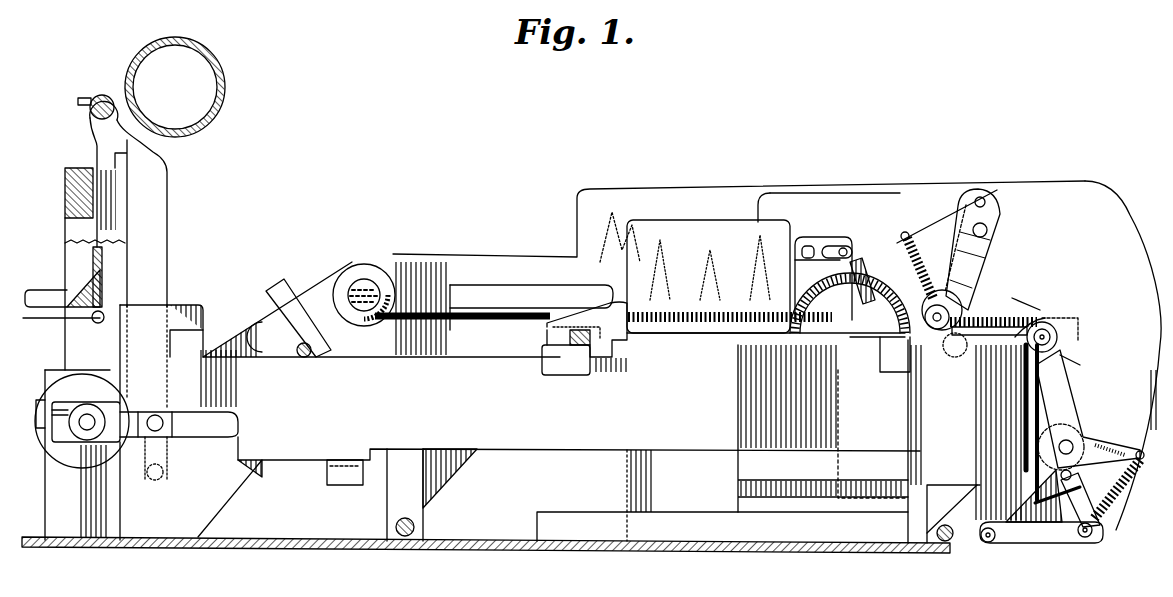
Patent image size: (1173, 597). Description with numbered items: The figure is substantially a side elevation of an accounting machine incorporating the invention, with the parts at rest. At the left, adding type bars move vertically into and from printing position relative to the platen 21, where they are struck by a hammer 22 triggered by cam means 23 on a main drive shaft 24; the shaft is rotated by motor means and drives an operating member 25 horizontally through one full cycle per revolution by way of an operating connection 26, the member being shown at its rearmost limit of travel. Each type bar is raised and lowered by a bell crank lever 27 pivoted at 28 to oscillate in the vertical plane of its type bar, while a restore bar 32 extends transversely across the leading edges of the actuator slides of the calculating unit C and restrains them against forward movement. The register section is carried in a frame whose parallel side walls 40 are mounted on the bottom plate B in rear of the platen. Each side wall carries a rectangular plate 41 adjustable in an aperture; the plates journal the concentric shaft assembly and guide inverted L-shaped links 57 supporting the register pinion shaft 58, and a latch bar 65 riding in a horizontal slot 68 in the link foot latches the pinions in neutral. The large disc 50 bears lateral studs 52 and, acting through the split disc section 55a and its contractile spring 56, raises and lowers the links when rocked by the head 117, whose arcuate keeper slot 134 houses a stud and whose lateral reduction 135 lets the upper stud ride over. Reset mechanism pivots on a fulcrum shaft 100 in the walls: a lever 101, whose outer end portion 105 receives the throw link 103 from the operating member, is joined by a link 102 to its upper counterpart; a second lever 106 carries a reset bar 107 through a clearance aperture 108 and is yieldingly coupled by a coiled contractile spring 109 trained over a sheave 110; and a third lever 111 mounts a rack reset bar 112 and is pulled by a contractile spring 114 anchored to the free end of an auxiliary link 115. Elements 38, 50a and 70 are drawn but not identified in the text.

The platen 21 is at (226, 76).
The hammer 22 is at (97, 96).
The cam means 23 is at (70, 385).
The main drive shaft 24 is at (82, 432).
The operating member 25 is at (333, 477).
The operating connection 26 is at (165, 430).
The bell crank lever 27 is at (328, 282).
The pivot 28 is at (368, 287).
The restore bar 32 is at (580, 337).
The slide 38 is at (288, 280).
The side wall 40 is at (1090, 181).
The rectangular plate 41 is at (798, 236).
The inner disc 50 is at (800, 288).
The lever 50a is at (961, 259).
The lateral stud 52 is at (836, 246).
The split disc section 55a is at (800, 310).
The contractile spring 56 is at (850, 303).
The inverted L-shaped link 57 is at (795, 262).
The register pinion shaft 58 is at (808, 245).
The latch bar 65 is at (846, 250).
The horizontal slot 68 is at (868, 262).
The bar 70 is at (490, 283).
The fulcrum shaft 100 is at (989, 233).
The lever 101 is at (982, 273).
The link 102 is at (1020, 322).
The throw link 103 is at (1015, 548).
The outer end portion 105 is at (1066, 512).
The second lever 106 is at (983, 292).
The reset bar 107 is at (898, 340).
The clearance aperture 108 is at (1070, 350).
The coiled contractile spring 109 is at (1000, 345).
The sheave 110 is at (1060, 323).
The third lever 111 is at (938, 190).
The reset bar 112 is at (984, 198).
The contractile spring 114 is at (930, 213).
The auxiliary link 115 is at (945, 330).
The head 117 is at (912, 265).
The arcuate keeper slot 134 is at (878, 332).
The lateral reduction 135 is at (820, 335).
The bottom plate B is at (470, 554).
The calculating unit C is at (862, 178).